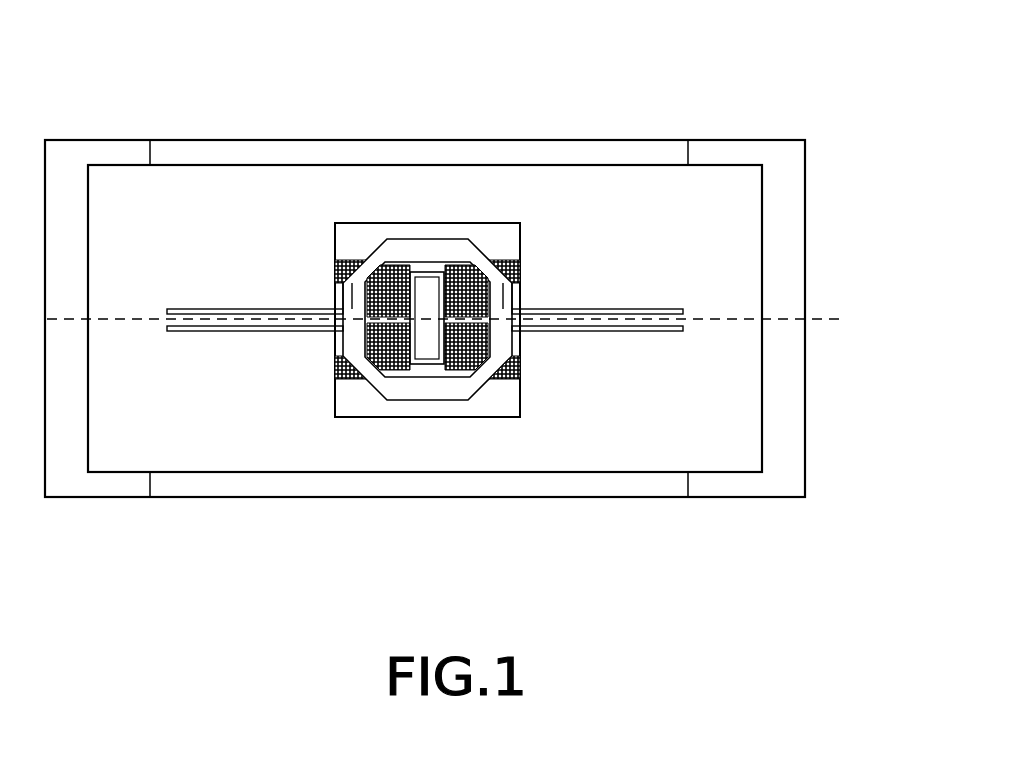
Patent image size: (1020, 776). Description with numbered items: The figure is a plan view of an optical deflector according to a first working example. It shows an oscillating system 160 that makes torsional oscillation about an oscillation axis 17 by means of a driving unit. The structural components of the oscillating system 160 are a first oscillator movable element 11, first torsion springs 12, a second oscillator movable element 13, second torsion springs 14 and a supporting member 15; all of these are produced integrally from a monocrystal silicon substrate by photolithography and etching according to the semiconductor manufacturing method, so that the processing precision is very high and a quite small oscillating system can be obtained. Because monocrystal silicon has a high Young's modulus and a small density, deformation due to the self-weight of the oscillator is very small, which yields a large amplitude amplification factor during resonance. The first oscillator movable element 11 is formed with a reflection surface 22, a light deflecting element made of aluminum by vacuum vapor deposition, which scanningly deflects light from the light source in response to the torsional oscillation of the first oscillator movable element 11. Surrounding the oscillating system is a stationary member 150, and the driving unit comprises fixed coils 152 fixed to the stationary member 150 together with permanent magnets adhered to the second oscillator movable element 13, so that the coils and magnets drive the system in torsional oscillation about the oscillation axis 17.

The oscillating system 160 is at (548, 62).
The stationary member 150 is at (588, 139).
The fixed coils 152 is at (408, 383).
The supporting member 15 is at (198, 180).
The second torsion springs 14 is at (237, 308).
The first torsion springs 12 is at (392, 310).
The first oscillator movable element 11 is at (417, 263).
The second oscillator movable element 13 is at (427, 243).
The reflection surface 22 is at (435, 290).
The oscillation axis 17 is at (845, 319).